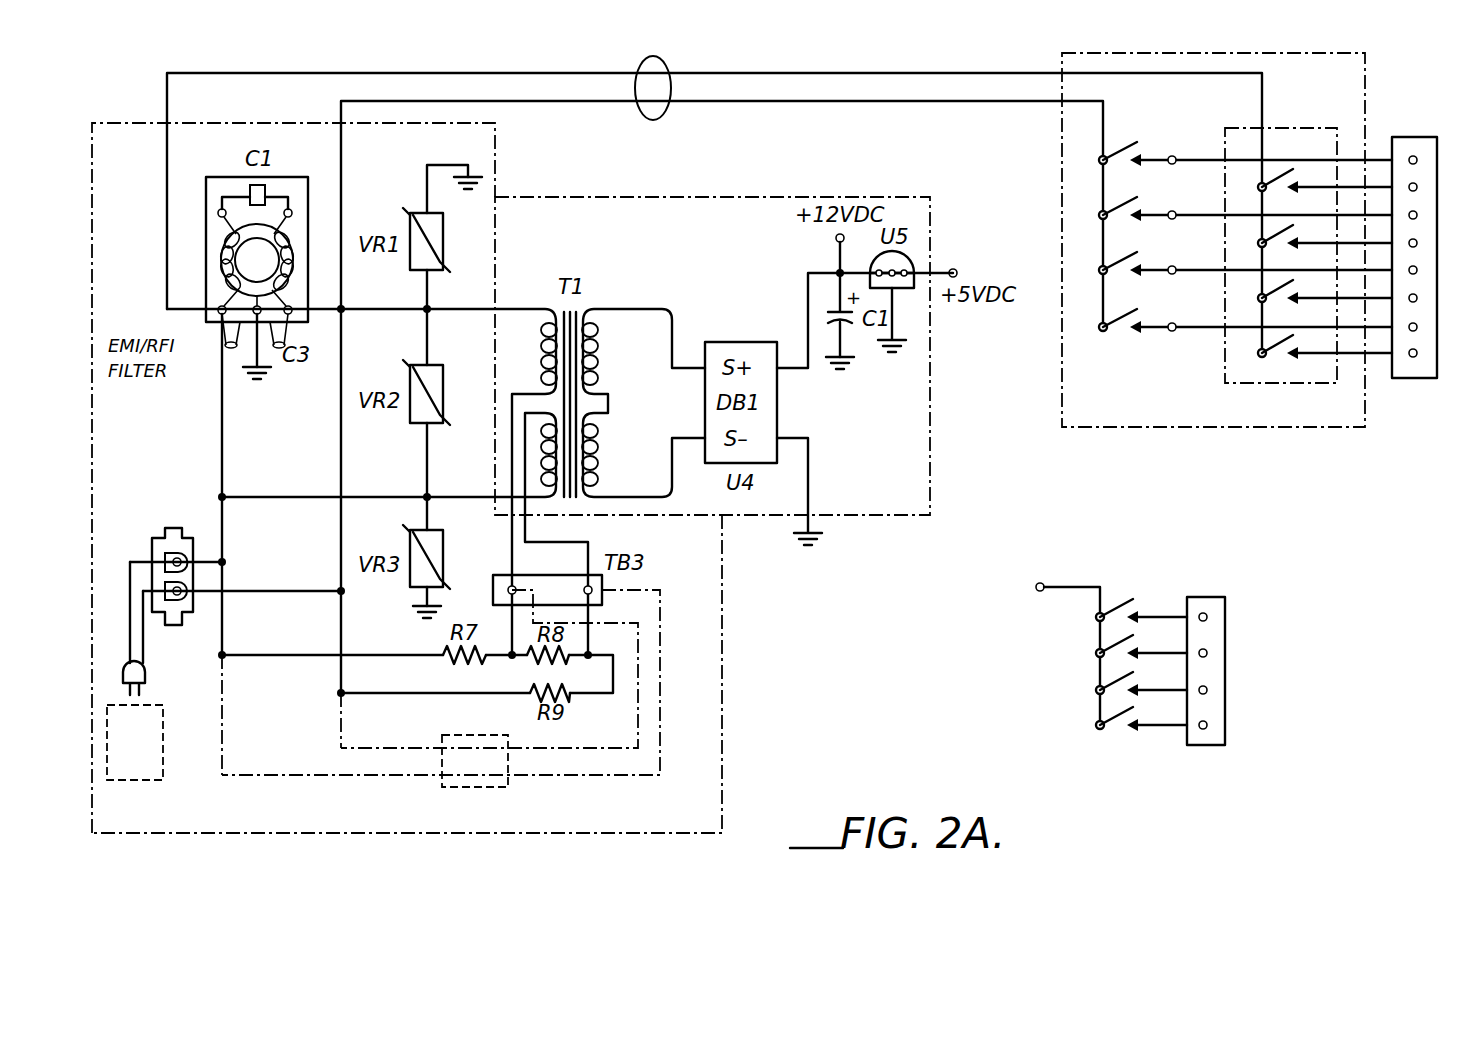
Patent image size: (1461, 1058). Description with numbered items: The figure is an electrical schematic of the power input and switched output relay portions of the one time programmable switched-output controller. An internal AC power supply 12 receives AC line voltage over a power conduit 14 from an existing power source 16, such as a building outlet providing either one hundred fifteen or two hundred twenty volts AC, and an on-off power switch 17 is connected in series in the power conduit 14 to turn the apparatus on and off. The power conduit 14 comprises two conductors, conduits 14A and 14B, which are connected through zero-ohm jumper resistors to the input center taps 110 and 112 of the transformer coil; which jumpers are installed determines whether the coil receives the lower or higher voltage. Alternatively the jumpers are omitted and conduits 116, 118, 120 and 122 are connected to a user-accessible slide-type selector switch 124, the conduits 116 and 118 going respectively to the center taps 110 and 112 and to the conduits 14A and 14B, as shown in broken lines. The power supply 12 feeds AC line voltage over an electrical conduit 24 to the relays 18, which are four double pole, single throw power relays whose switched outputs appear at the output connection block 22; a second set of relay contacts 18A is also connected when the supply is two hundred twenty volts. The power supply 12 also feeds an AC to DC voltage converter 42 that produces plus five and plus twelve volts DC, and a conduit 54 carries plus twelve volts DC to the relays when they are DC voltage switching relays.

The internal AC power supply 12 is at (722, 735).
The power conduit 14 is at (139, 538).
The conduit of power conduit 14A is at (204, 560).
The conduit of power conduit 14B is at (228, 594).
The existing power source 16 is at (163, 746).
The on-off power switch 17 is at (147, 673).
The relays 18 is at (1185, 52).
The second set of relay contacts 18A is at (1296, 128).
The output connection block 22 is at (1418, 137).
The electrical conduit 24 is at (665, 63).
The AC to DC voltage converter 42 is at (598, 197).
The conduit 54 is at (1065, 586).
The input center tap 110 is at (563, 312).
The input center tap 112 is at (540, 420).
The conduit 116 is at (640, 700).
The conduit 118 is at (662, 650).
The conduit 120 is at (356, 776).
The conduit 122 is at (343, 735).
The slide-type selector switch 124 is at (488, 795).